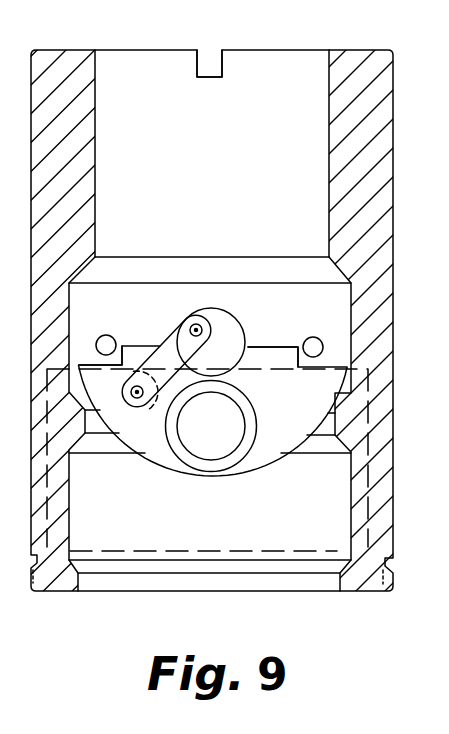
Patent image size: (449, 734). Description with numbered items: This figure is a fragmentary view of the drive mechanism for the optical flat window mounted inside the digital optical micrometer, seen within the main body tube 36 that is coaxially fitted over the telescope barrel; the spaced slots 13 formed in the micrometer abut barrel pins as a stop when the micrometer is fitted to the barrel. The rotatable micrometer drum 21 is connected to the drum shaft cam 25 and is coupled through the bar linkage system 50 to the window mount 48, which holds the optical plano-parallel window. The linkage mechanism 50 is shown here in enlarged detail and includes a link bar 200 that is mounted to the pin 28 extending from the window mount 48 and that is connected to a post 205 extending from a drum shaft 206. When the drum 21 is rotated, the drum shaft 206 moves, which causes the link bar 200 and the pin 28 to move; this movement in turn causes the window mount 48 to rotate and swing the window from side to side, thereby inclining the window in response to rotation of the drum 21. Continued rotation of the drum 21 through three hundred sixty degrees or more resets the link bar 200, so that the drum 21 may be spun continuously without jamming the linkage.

The spaced slots 13 is at (219, 64).
The main body tube 36 is at (395, 150).
The window mount 48 is at (378, 411).
The micrometer drum 21 is at (165, 475).
The link bar 200 is at (143, 345).
The drum shaft 206 is at (248, 347).
The drum shaft cam 25 is at (229, 470).
The bar linkage system 50 is at (164, 347).
The drum shaft post 28 is at (140, 407).
The post 205 is at (201, 325).